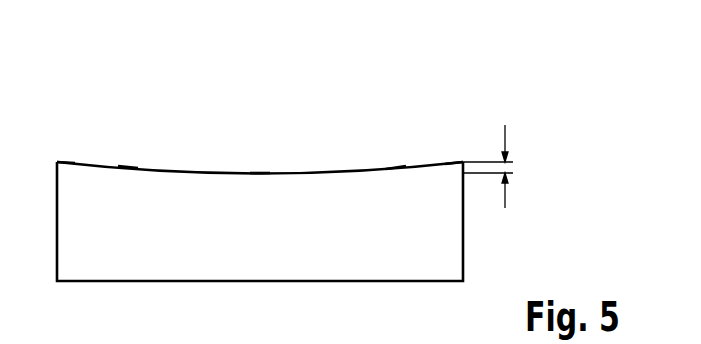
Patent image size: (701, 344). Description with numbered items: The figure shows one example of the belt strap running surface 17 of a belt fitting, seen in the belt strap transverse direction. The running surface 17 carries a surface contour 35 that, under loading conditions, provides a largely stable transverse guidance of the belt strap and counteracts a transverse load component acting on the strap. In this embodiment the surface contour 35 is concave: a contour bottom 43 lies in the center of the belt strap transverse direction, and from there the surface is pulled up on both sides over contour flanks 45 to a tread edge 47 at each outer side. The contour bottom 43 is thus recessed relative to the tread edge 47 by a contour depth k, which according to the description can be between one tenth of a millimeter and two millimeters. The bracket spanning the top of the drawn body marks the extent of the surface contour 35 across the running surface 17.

The belt strap running surface 17 is at (277, 238).
The surface contour 35 is at (475, 74).
The contour bottom 43 is at (259, 173).
The contour flanks 45 is at (128, 165).
The tread edge 47 is at (63, 160).
The contour depth k is at (508, 168).